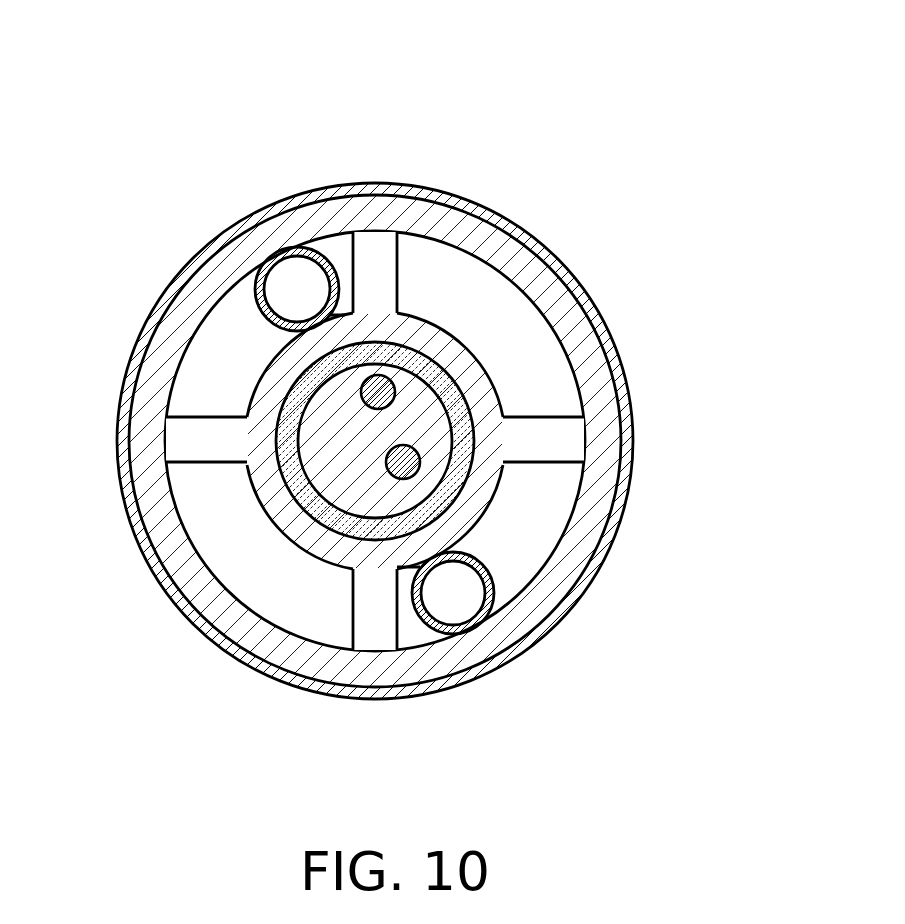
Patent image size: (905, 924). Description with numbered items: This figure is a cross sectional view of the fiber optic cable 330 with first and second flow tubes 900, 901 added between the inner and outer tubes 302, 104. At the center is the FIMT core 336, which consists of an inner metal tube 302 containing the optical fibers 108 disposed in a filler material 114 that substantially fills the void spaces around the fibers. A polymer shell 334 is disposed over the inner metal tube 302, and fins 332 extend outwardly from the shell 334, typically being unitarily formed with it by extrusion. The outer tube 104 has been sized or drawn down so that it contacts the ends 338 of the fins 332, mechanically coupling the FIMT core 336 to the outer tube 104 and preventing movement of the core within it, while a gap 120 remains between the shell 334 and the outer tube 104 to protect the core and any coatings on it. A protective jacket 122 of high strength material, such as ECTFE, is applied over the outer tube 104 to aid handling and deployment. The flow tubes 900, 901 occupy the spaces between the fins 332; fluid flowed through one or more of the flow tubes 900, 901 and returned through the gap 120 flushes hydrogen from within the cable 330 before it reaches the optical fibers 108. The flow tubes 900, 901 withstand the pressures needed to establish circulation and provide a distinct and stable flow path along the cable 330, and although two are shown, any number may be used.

The fiber optic cable 330 is at (492, 151).
The fins 332 is at (400, 266).
The ends of the fins 338 is at (380, 250).
The FIMT core 336 is at (262, 332).
The filler material 114 is at (322, 407).
The gap 120 is at (545, 371).
The outer tube 104 is at (607, 453).
The protective jacket 122 is at (620, 507).
The inner metal tube 302 is at (300, 467).
The polymer shell 334 is at (297, 527).
The optical fibers 108 is at (412, 470).
The first flow tube 900 is at (442, 630).
The second flow tube 901 is at (323, 260).